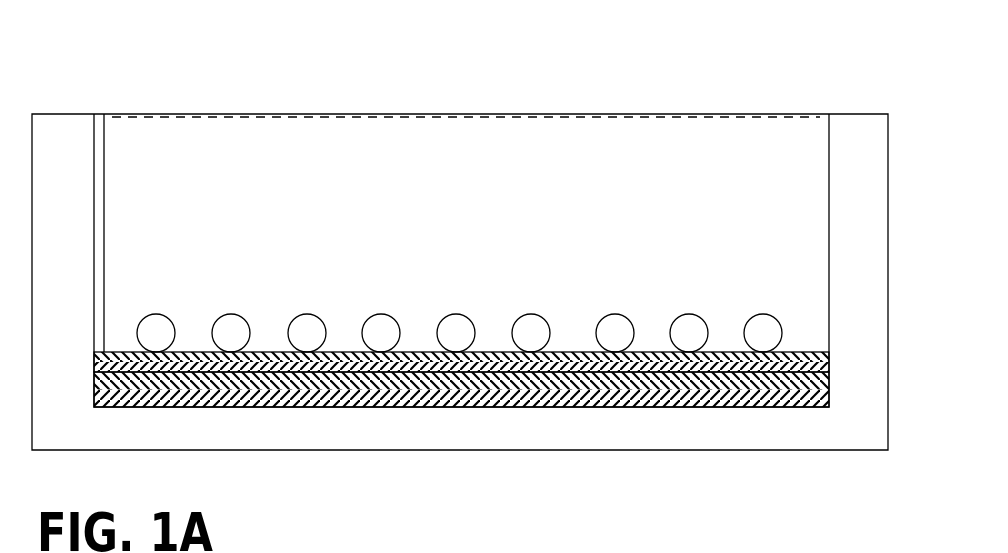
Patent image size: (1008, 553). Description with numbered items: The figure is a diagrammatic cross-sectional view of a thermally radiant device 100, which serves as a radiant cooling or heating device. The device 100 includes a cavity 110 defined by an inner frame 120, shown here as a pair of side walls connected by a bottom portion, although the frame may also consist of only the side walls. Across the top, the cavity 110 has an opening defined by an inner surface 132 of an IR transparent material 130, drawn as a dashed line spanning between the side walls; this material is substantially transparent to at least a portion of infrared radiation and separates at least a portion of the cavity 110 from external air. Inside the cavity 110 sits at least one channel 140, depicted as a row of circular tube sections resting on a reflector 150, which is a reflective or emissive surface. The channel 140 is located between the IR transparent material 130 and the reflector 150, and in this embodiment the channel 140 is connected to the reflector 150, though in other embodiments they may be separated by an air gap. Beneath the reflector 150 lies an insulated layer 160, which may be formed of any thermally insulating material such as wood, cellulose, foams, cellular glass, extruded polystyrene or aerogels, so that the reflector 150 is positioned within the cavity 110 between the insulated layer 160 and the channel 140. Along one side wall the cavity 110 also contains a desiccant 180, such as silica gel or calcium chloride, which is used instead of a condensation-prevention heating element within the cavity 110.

The thermally radiant device 100 is at (257, 82).
The cavity 110 is at (499, 146).
The inner frame 120 is at (862, 452).
The IR transparent material 130 is at (619, 116).
The inner surface 132 is at (762, 122).
The channel 140 is at (457, 313).
The reflector 150 is at (721, 352).
The insulated layer 160 is at (462, 408).
The desiccant 180 is at (105, 203).